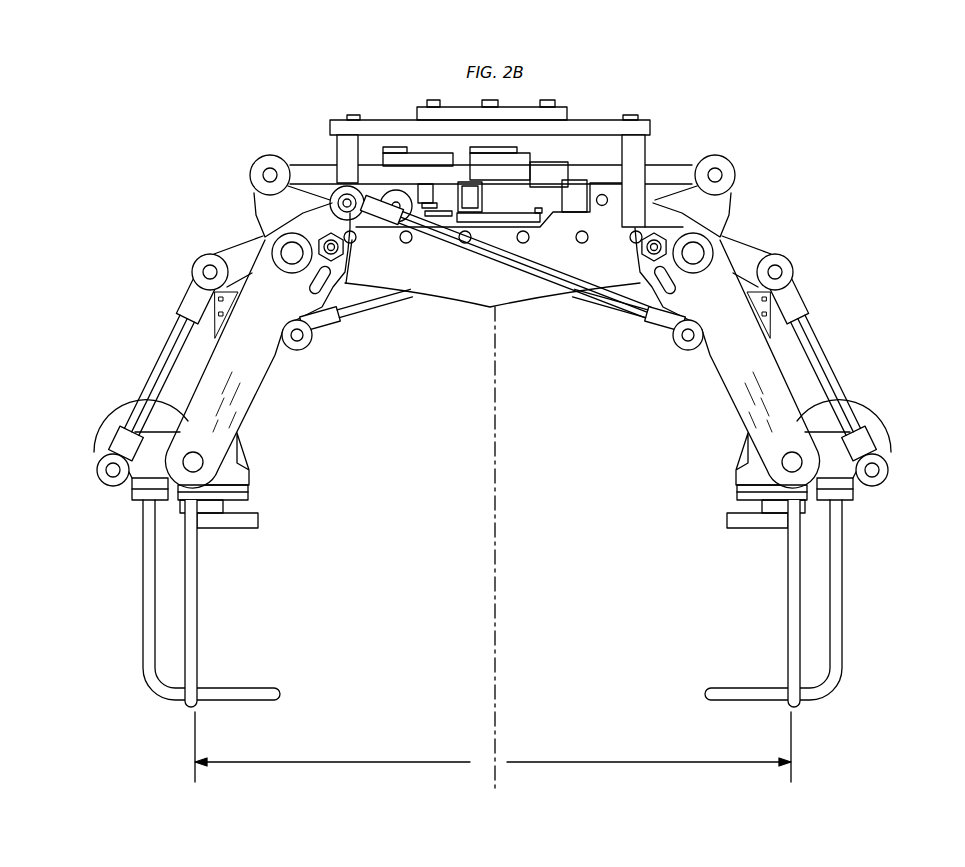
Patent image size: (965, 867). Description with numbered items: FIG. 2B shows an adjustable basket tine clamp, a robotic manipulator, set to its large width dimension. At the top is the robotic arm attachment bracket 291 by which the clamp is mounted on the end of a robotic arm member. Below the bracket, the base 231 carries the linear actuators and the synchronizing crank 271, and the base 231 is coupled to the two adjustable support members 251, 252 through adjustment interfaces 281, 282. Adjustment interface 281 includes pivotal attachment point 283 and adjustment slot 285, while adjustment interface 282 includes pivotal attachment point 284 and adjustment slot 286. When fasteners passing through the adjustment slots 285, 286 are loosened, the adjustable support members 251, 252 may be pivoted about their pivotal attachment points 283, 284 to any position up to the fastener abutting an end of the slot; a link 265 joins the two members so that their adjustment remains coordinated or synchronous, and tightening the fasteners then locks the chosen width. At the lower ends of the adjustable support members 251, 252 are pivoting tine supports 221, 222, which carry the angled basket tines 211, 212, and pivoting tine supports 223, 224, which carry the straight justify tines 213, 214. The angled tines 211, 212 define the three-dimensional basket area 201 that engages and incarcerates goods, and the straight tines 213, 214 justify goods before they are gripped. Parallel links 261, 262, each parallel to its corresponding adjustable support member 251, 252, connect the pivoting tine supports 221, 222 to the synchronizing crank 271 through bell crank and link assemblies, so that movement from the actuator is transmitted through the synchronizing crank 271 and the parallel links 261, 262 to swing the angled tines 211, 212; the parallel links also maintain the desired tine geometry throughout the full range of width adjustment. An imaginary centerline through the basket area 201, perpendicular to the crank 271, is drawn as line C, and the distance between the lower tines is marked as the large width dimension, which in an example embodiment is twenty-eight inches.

The basket area 201 is at (450, 588).
The angled tine 211 is at (255, 686).
The angled tine 212 is at (823, 692).
The straight tine 213 is at (198, 630).
The straight tine 214 is at (787, 643).
The pivoting tine support 221 is at (116, 447).
The pivoting tine support 222 is at (860, 460).
The pivoting tine support 223 is at (235, 468).
The pivoting tine support 224 is at (743, 472).
The base 231 is at (477, 290).
The adjustable support member 251 is at (242, 390).
The adjustable support member 252 is at (730, 387).
The parallel link 261 is at (163, 346).
The parallel link 262 is at (817, 331).
The link 265 is at (495, 262).
The synchronizing crank 271 is at (432, 152).
The adjustment interface 281 is at (296, 289).
The adjustment interface 282 is at (690, 289).
The pivotal attachment point 283 is at (258, 242).
The pivotal attachment point 284 is at (710, 242).
The adjustment slot 285 is at (345, 325).
The adjustment slot 286 is at (650, 282).
The robotic arm attachment bracket 291 is at (618, 120).